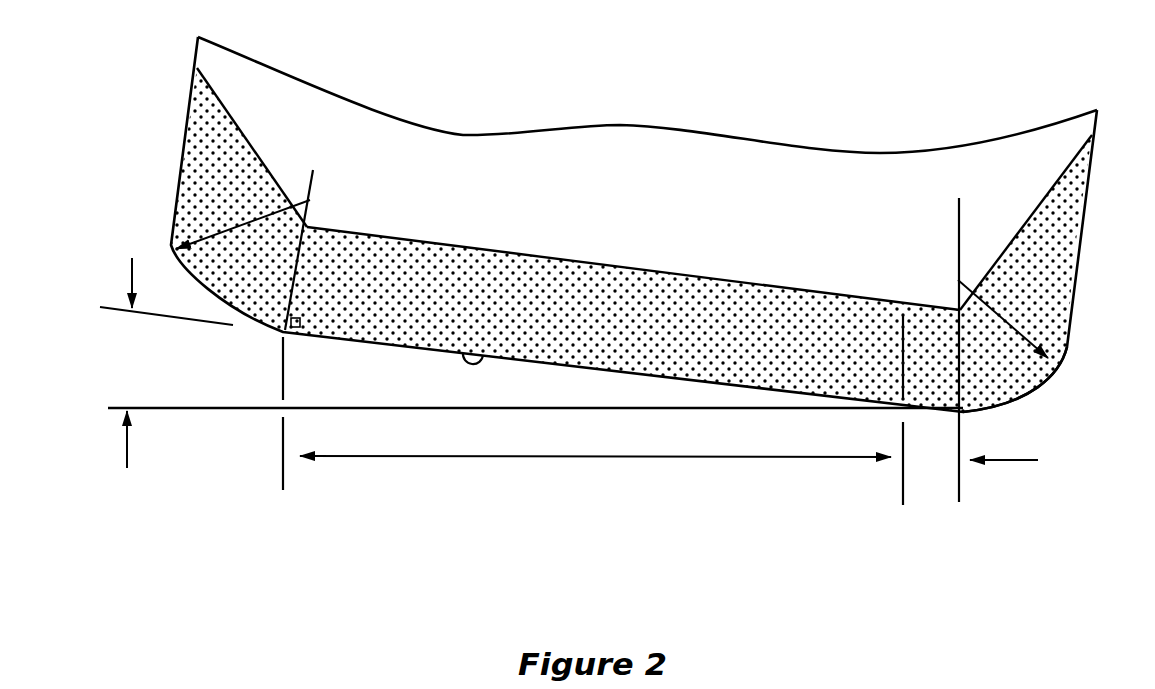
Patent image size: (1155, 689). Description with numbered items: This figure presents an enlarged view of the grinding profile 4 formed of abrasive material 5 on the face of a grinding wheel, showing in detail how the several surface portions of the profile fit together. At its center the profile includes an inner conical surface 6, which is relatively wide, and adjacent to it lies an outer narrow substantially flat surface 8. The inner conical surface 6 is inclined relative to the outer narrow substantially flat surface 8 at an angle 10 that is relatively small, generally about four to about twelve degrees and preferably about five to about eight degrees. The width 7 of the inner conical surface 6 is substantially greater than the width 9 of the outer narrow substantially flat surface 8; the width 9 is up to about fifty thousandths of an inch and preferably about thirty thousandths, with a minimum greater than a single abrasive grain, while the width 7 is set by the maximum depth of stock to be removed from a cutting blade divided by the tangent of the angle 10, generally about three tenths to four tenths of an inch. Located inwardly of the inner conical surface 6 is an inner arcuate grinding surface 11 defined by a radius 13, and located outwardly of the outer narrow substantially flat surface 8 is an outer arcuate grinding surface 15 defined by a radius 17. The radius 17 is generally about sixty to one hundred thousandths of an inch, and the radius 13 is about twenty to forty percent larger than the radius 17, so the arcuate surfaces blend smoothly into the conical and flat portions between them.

The grinding profile 4 is at (702, 379).
The abrasive material 5 is at (1062, 214).
The inner conical surface 6 is at (487, 357).
The width of the inner conical surface 7 is at (602, 468).
The outer narrow substantially flat surface 8 is at (933, 415).
The width of the outer narrow substantially flat surface 9 is at (932, 498).
The angle 10 is at (111, 348).
The inner arcuate grinding surface 11 is at (193, 287).
The radius 13 is at (250, 222).
The outer arcuate grinding surface 15 is at (1030, 390).
The radius 17 is at (1010, 306).